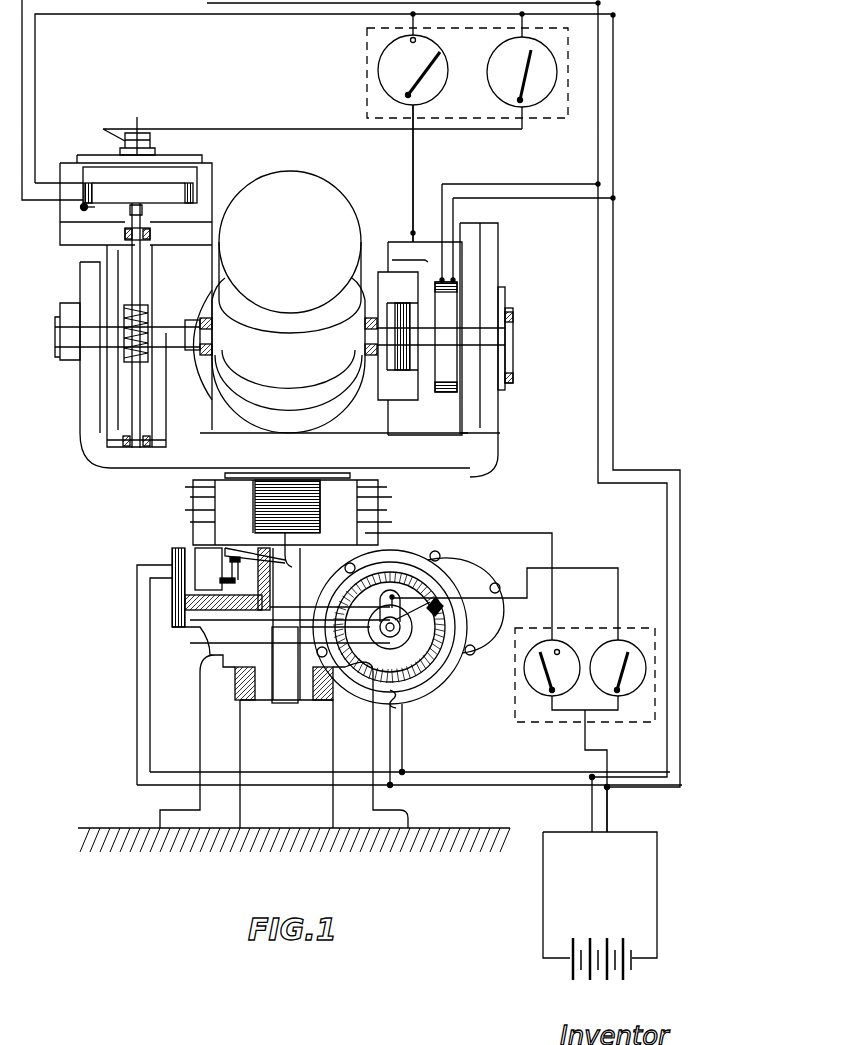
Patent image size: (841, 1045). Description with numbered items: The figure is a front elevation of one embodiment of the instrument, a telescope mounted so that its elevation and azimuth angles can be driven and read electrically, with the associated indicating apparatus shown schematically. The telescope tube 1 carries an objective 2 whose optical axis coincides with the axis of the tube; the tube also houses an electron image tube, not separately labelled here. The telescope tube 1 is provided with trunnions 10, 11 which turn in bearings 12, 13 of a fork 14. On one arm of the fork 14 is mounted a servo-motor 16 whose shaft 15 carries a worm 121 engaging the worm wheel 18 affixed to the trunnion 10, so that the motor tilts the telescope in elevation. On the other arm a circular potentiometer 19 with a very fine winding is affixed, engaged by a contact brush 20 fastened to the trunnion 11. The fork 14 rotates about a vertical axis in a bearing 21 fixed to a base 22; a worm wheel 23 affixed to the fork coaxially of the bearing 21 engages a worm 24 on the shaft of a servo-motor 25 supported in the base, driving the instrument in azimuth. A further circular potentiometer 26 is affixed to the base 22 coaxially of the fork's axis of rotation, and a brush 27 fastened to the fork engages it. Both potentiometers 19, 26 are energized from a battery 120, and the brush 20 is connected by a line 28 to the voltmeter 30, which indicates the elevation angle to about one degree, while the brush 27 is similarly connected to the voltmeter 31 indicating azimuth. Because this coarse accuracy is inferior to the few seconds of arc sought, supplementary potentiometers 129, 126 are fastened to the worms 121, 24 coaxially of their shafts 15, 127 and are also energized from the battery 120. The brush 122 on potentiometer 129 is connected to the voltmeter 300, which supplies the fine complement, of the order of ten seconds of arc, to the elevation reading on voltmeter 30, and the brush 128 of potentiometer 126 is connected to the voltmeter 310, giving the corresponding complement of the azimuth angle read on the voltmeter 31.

The telescope tube 1 is at (350, 355).
The objective 2 is at (332, 222).
The trunnion 10 is at (198, 315).
The trunnion 11 is at (470, 342).
The bearing 12 is at (185, 360).
The bearing 13 is at (500, 308).
The fork 14 is at (100, 470).
The shaft 15 is at (142, 247).
The servo-motor 16 is at (95, 236).
The worm wheel 18 is at (128, 393).
The circular potentiometer 19 is at (457, 282).
The contact brush 20 is at (430, 395).
The bearing 21 is at (258, 690).
The base 22 is at (222, 726).
The worm wheel 23 is at (218, 632).
The worm 24 is at (405, 645).
The servo-motor 25 is at (480, 562).
The circular potentiometer 26 is at (175, 600).
The brush 27 is at (232, 562).
The line 28 is at (413, 168).
The voltmeter 30 is at (467, 128).
The voltmeter 31 is at (585, 730).
The battery 120 is at (614, 938).
The worm 121 is at (126, 330).
The brush 122 is at (80, 210).
The potentiometer 126 is at (410, 685).
The shaft 127 is at (380, 640).
The brush 128 is at (440, 612).
The potentiometer 129 is at (200, 188).
The voltmeter 300 is at (525, 71).
The voltmeter 310 is at (620, 679).